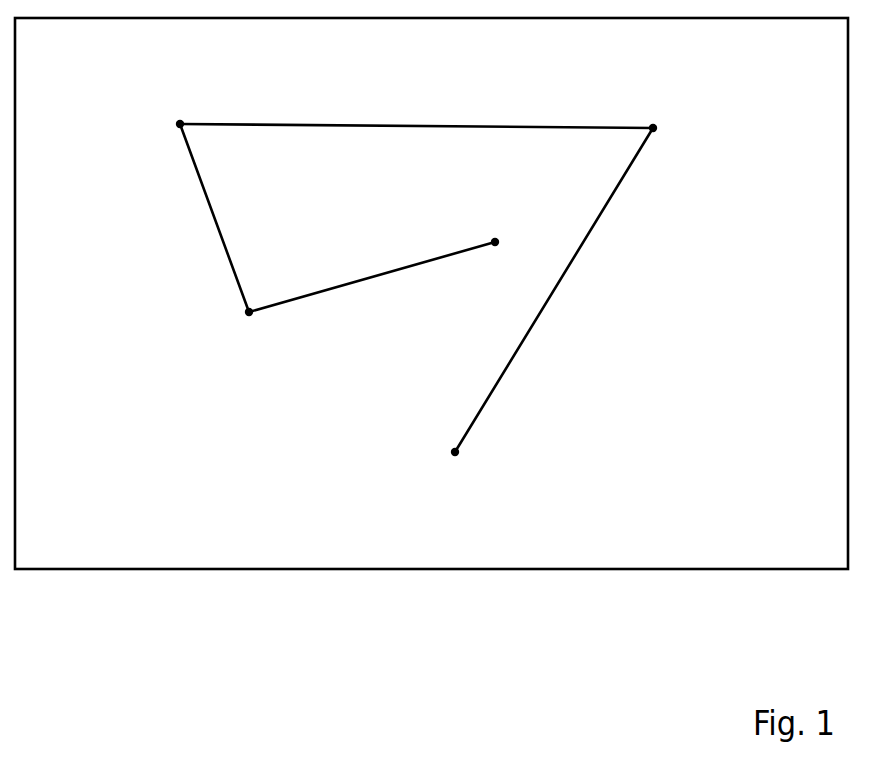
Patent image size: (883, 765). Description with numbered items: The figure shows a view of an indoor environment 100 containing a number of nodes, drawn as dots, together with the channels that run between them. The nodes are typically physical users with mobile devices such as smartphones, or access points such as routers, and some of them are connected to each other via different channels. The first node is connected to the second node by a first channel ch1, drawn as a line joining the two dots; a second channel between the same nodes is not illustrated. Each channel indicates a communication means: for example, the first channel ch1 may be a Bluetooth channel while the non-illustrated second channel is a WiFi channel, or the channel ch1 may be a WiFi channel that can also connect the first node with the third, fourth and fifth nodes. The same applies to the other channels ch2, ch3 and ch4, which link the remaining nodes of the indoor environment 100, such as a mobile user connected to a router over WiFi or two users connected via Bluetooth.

The indoor environment 100 is at (765, 570).
The first channel ch1 is at (204, 218).
The channel ch2 is at (372, 284).
The channel ch3 is at (416, 99).
The channel ch4 is at (554, 290).